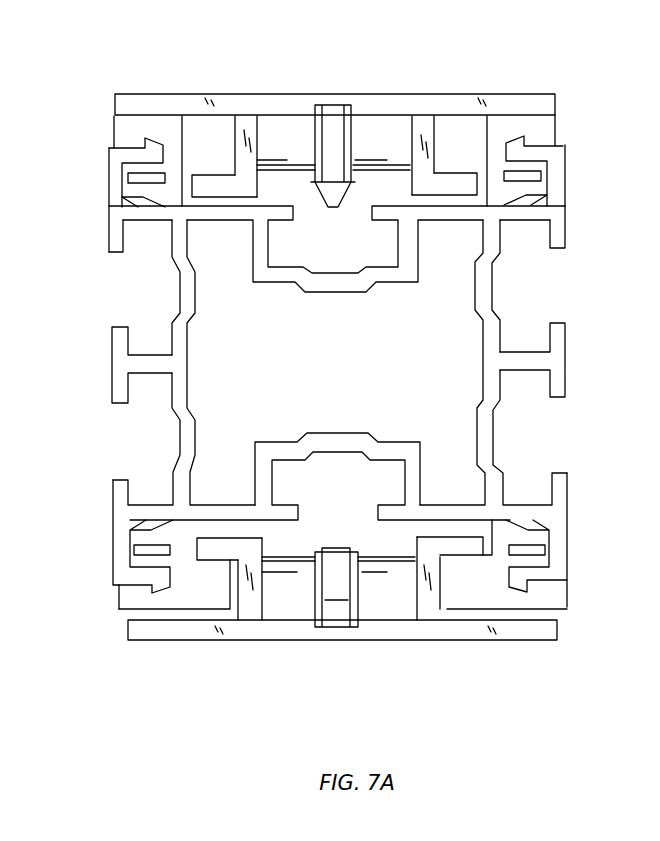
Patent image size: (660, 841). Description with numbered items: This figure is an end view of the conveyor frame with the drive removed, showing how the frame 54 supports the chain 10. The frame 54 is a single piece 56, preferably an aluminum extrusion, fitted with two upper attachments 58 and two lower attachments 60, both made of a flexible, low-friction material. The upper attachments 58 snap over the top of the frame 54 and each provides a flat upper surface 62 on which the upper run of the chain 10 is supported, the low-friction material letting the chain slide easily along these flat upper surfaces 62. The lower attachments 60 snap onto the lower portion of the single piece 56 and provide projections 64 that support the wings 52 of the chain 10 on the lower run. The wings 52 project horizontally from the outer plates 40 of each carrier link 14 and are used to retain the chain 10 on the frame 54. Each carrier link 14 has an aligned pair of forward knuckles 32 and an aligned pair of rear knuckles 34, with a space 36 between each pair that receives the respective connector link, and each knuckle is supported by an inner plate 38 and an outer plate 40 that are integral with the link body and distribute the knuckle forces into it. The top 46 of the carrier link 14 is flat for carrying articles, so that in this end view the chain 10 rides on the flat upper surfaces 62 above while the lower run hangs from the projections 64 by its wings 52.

The chain 10 is at (203, 66).
The carrier link 14 is at (560, 90).
The forward knuckles 32 is at (290, 607).
The rear knuckles 34 is at (276, 123).
The space 36 is at (340, 128).
The inner plate 38 is at (327, 547).
The outer plate 40 is at (242, 122).
The top 46 is at (484, 93).
The wings 52 is at (217, 193).
The frame 54 is at (548, 306).
The single piece 56 is at (112, 350).
The upper attachments 58 is at (123, 131).
The lower attachments 60 is at (113, 602).
The flat upper surface 62 is at (143, 115).
The projections 64 is at (195, 613).